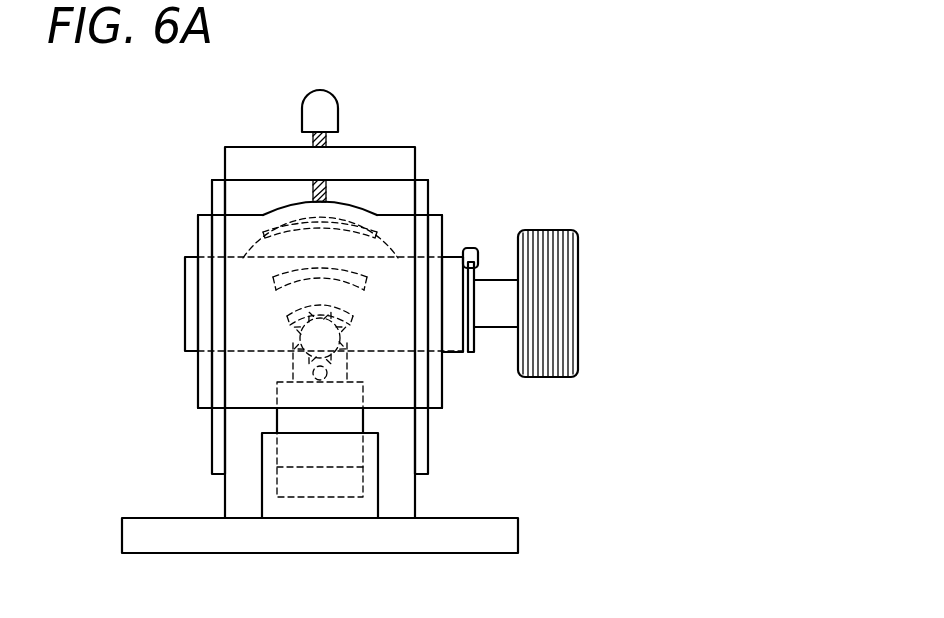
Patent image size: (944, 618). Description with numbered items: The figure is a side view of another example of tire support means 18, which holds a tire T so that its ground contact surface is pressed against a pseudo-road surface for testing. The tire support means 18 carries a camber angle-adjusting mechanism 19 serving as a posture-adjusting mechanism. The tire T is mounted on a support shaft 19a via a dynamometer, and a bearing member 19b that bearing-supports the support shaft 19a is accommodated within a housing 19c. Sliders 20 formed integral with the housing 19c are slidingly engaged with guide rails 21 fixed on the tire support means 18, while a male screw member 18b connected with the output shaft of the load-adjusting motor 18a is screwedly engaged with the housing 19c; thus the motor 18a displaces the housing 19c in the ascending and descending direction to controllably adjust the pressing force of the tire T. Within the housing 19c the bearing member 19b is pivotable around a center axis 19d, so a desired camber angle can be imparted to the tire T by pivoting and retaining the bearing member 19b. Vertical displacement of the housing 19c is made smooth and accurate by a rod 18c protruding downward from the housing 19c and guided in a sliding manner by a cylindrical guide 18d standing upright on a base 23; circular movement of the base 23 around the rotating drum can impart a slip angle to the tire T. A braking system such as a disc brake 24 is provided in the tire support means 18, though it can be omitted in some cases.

The tire support means 18 is at (402, 132).
The load-adjusting motor 18a is at (317, 98).
The male screw member 18b is at (310, 195).
The rod 18c is at (308, 420).
The cylindrical guide 18d is at (320, 503).
The camber angle-adjusting mechanism 19 is at (397, 245).
The support shaft 19a is at (490, 323).
The bearing member 19b is at (382, 325).
The housing 19c is at (335, 210).
The center axis 19d is at (313, 373).
The slider 20 is at (205, 228).
The guide rail 21 is at (218, 185).
The base 23 is at (497, 537).
The disc brake 24 is at (482, 250).
The tire T is at (578, 283).